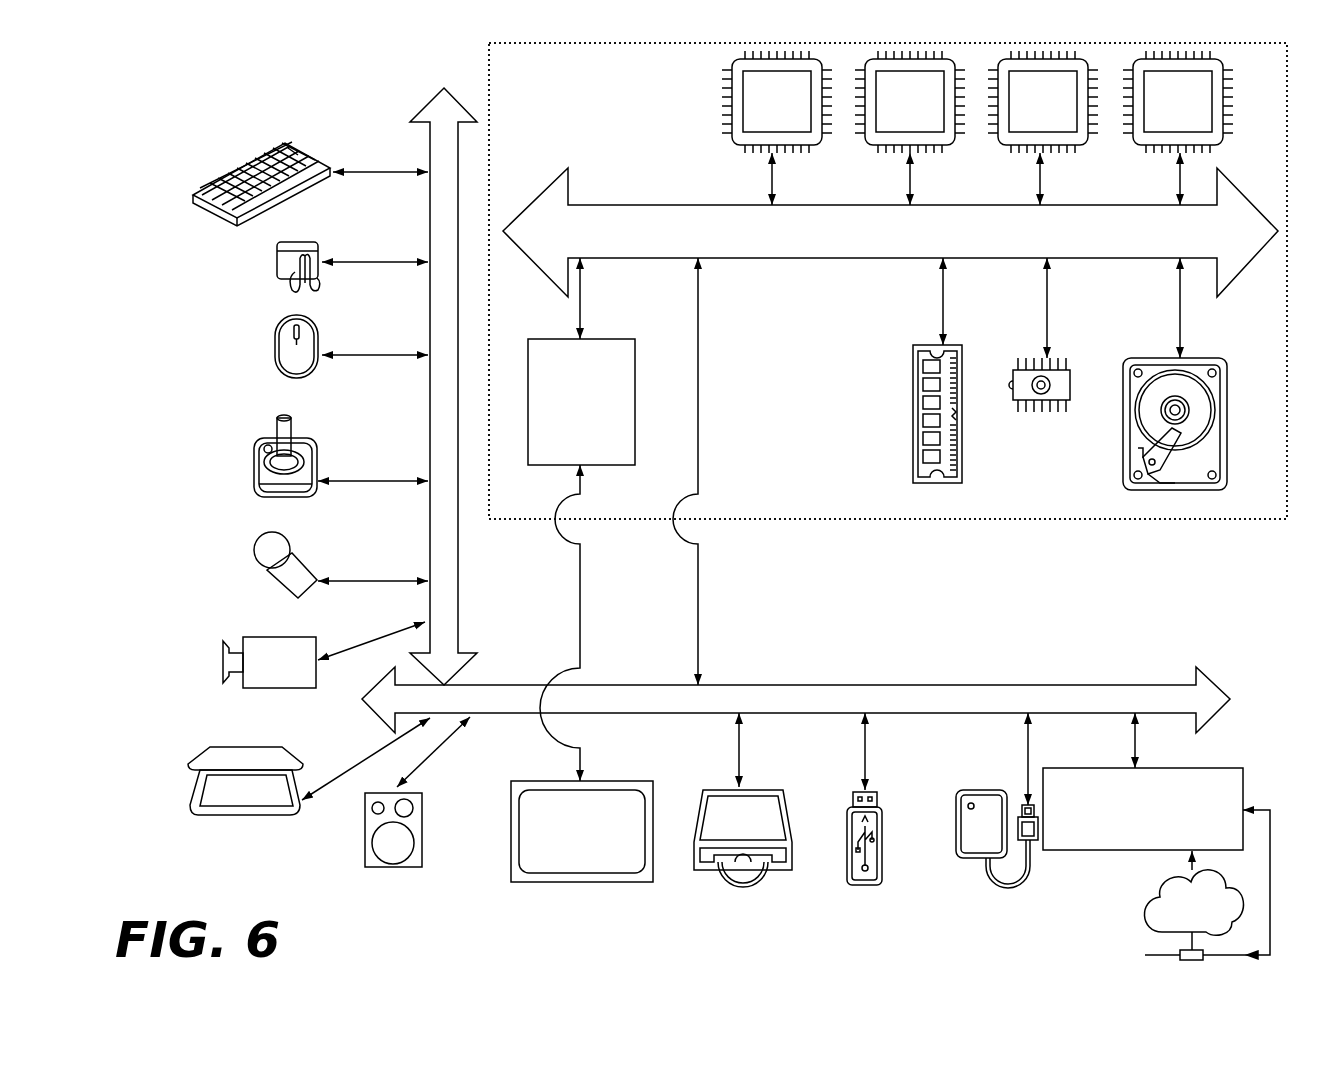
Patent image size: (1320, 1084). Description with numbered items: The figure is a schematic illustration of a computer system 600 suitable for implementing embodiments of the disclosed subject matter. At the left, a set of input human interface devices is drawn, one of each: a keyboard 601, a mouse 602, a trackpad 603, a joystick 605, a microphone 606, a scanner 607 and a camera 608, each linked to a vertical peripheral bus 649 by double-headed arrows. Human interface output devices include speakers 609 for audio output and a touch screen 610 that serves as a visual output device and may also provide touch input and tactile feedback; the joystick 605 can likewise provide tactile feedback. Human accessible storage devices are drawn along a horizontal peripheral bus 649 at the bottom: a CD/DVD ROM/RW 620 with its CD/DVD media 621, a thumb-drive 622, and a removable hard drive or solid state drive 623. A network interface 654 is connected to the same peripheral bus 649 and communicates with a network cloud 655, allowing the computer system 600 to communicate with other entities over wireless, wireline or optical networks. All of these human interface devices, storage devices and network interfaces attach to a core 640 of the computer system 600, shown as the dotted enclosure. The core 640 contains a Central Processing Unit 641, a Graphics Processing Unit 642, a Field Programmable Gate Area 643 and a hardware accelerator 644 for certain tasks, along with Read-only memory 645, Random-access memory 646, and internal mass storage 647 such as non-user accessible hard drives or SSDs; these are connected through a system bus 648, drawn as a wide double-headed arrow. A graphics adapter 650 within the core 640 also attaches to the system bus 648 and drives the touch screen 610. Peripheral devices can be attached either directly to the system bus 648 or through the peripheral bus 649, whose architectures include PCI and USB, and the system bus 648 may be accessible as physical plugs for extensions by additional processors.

The computer system 600 is at (243, 130).
The keyboard 601 is at (193, 200).
The mouse 602 is at (277, 350).
The trackpad 603 is at (277, 266).
The joystick 605 is at (254, 480).
The microphone 606 is at (254, 552).
The scanner 607 is at (190, 805).
The camera 608 is at (228, 665).
The speakers 609 is at (393, 867).
The touch screen 610 is at (580, 882).
The CD/DVD ROM/RW 620 is at (786, 870).
The CD/DVD media 621 is at (732, 880).
The thumb-drive 622 is at (866, 885).
The removable hard drive or solid state drive 623 is at (965, 858).
The core 640 is at (880, 519).
The Central Processing Unit 641 is at (777, 128).
The Graphics Processing Unit 642 is at (910, 128).
The Field Programmable Gate Area 643 is at (1043, 128).
The hardware accelerator 644 is at (1178, 128).
The Read-only memory 645 is at (1035, 412).
The Random-access memory 646 is at (910, 440).
The internal mass storage 647 is at (1140, 358).
The system bus 648 is at (890, 232).
The peripheral bus 649 is at (428, 135).
The graphics adapter 650 is at (581, 519).
The network interface 654 is at (1154, 836).
The network cloud 655 is at (1147, 925).